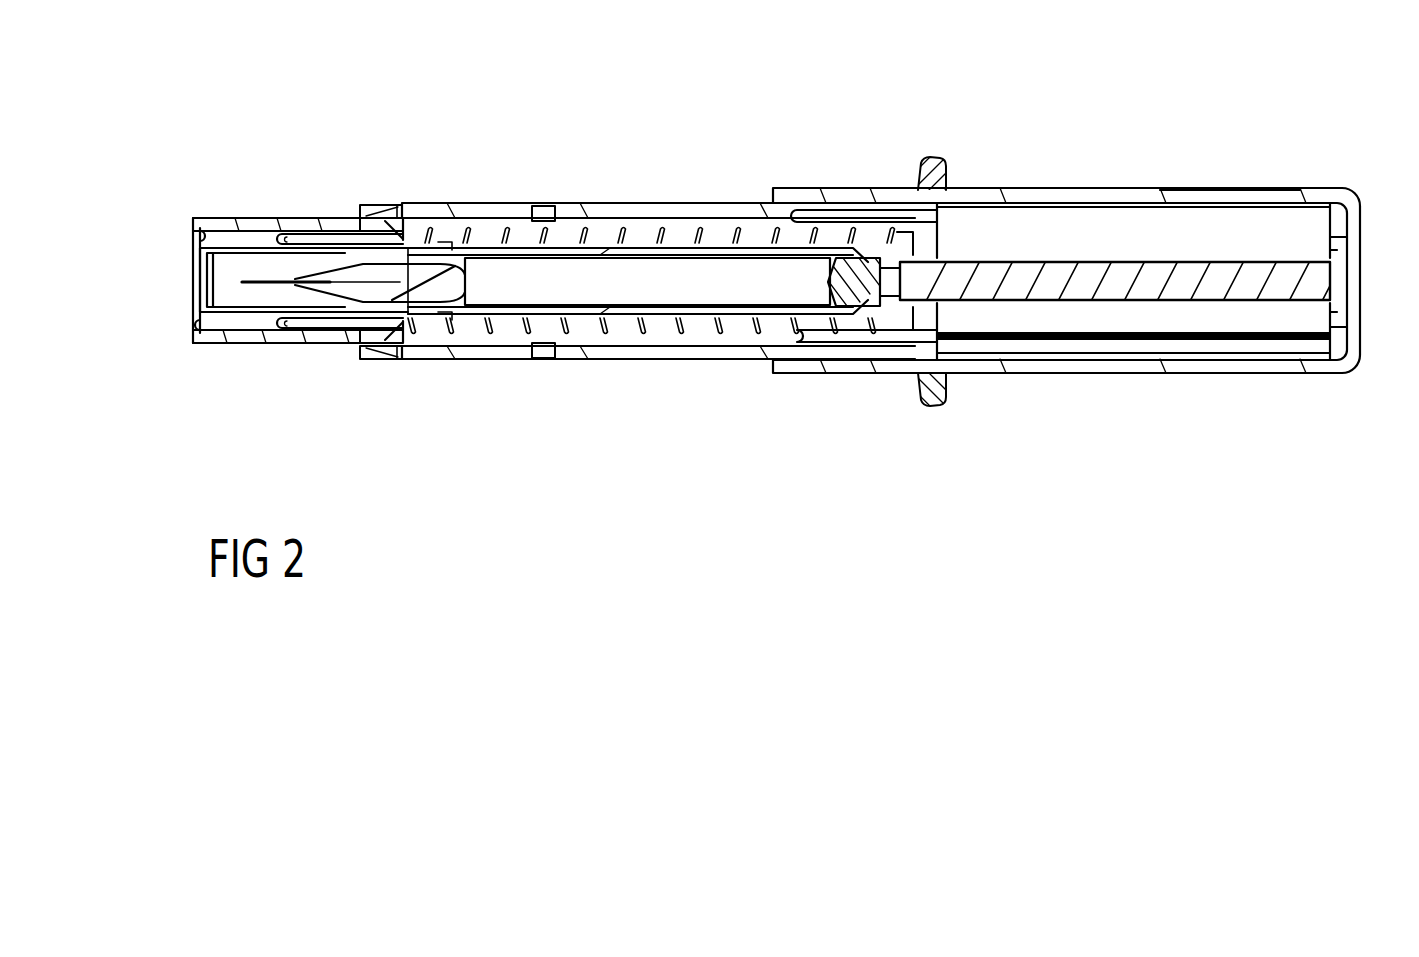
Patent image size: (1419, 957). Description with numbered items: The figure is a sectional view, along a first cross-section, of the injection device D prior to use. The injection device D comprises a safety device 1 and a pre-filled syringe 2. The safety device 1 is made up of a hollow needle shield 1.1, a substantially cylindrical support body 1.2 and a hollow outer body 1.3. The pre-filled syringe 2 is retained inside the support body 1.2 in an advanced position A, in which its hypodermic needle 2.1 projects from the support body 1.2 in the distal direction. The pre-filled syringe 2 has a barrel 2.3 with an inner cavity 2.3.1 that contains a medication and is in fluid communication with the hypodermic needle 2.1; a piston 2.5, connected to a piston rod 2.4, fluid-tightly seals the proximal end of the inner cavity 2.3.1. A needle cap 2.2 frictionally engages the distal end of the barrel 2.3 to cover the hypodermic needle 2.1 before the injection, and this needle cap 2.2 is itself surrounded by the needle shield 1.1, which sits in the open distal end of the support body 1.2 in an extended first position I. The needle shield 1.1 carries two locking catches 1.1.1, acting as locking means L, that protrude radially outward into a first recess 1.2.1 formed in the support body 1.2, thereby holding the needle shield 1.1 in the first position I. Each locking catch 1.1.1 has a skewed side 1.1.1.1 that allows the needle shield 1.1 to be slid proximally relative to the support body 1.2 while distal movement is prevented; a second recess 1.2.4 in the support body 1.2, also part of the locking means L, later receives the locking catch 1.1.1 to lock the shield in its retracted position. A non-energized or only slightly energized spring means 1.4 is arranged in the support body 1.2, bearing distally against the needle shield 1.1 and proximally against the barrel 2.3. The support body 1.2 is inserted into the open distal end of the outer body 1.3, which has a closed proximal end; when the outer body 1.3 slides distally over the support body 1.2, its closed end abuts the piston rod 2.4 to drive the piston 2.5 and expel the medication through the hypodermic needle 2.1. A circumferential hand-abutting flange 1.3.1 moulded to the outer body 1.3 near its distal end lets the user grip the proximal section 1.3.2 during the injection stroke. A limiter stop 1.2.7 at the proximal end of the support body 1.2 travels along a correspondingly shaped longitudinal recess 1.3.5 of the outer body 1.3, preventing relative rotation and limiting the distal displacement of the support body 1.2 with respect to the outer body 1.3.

The safety device 1 is at (470, 106).
The extended first position I is at (207, 210).
The needle shield 1.1 is at (262, 218).
The locking catch 1.1.1 is at (375, 225).
The skewed side 1.1.1.1 is at (400, 205).
The support body 1.2 is at (628, 212).
The first recess 1.2.1 is at (393, 206).
The second recess 1.2.4 is at (548, 206).
The limiter stop 1.2.7 is at (932, 404).
The locking means L is at (537, 203).
The outer body 1.3 is at (790, 195).
The hand-abutting flange 1.3.1 is at (930, 158).
The proximal section 1.3.2 is at (1080, 200).
The longitudinal recess 1.3.5 is at (1073, 362).
The spring means 1.4 is at (677, 343).
The pre-filled syringe 2 is at (612, 324).
The advanced position A is at (612, 324).
The hypodermic needle 2.1 is at (278, 284).
The needle cap 2.2 is at (200, 283).
The barrel 2.3 is at (740, 312).
The inner cavity 2.3.1 is at (657, 268).
The piston rod 2.4 is at (1148, 296).
The piston 2.5 is at (855, 316).
The injection device D is at (1244, 91).